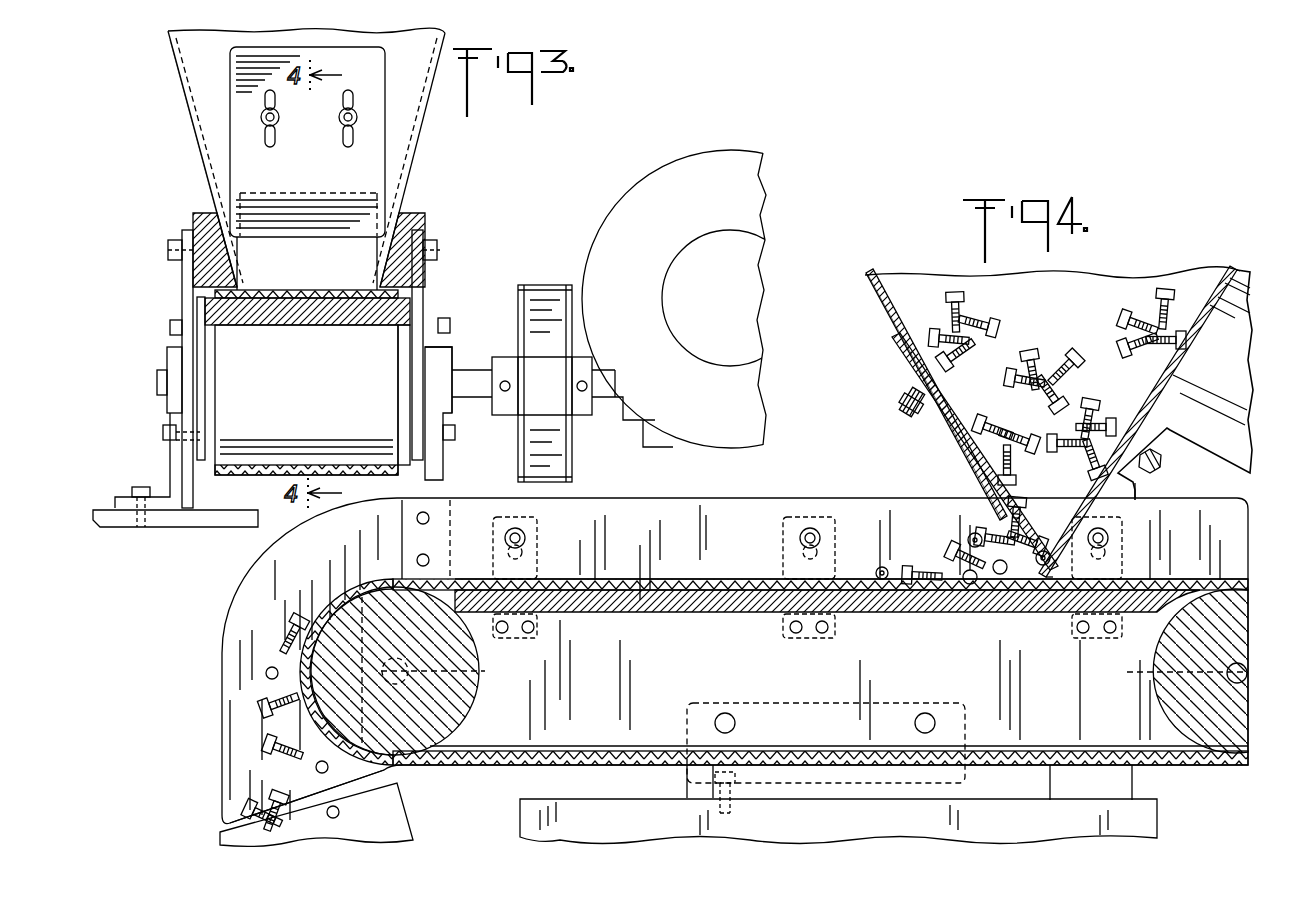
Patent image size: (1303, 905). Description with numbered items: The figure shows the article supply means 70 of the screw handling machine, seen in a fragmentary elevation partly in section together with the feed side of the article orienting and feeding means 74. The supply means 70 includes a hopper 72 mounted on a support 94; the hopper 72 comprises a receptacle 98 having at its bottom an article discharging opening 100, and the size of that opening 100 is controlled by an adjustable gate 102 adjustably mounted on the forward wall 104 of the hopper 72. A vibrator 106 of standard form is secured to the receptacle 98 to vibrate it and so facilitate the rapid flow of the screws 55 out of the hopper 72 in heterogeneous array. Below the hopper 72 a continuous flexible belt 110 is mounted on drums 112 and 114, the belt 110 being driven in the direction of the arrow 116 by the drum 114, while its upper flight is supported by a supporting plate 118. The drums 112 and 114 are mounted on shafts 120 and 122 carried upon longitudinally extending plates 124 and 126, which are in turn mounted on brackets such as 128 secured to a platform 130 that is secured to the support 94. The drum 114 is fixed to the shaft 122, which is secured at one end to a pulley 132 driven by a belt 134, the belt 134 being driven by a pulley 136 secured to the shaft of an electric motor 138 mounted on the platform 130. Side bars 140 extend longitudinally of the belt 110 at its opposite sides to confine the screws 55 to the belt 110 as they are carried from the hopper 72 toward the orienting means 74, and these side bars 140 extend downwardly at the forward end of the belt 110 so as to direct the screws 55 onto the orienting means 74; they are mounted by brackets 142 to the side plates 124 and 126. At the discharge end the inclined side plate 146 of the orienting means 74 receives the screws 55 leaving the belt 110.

In FIG. 4, the screws 55 is at (1053, 343).
In FIG. 4, the article supply means 70 is at (851, 491).
In FIG. 4, the hopper 72 is at (860, 306).
In FIG. 4, the article orienting and feeding means 74 is at (429, 836).
In FIG. 3, the support 94 is at (118, 528).
In FIG. 3, the receptacle 98 is at (183, 78).
In FIG. 3, the article discharging opening 100 is at (307, 263).
In FIG. 4, the article discharging opening 100 is at (1015, 520).
In FIG. 3, the adjustable gate 102 is at (307, 142).
In FIG. 4, the adjustable gate 102 is at (960, 455).
In FIG. 3, the forward wall 104 is at (210, 108).
In FIG. 4, the forward wall 104 is at (885, 318).
In FIG. 4, the vibrator 106 is at (1220, 335).
In FIG. 3, the continuous flexible belt 110 is at (258, 326).
In FIG. 4, the continuous flexible belt 110 is at (628, 578).
In FIG. 4, the drum 112 is at (470, 693).
In FIG. 4, the drum 114 is at (1175, 690).
In FIG. 4, the arrow 116 is at (905, 533).
In FIG. 3, the supporting plate 118 is at (352, 312).
In FIG. 4, the supporting plate 118 is at (652, 608).
In FIG. 4, the shaft 120 is at (457, 664).
In FIG. 3, the shaft 122 is at (470, 378).
In FIG. 4, the shaft 122 is at (1130, 672).
In FIG. 3, the plate 124 is at (195, 358).
In FIG. 4, the plate 124 is at (862, 657).
In FIG. 3, the plate 126 is at (430, 365).
In FIG. 3, the bracket 128 is at (180, 465).
In FIG. 4, the bracket 128 is at (690, 790).
In FIG. 3, the platform 130 is at (250, 527).
In FIG. 4, the platform 130 is at (528, 816).
In FIG. 3, the pulley 132 is at (522, 478).
In FIG. 3, the belt 134 is at (555, 470).
In FIG. 3, the pulley 136 is at (574, 415).
In FIG. 3, the electric motor 138 is at (680, 448).
In FIG. 3, the side bars 140 is at (193, 212).
In FIG. 4, the side bars 140 is at (743, 498).
In FIG. 3, the brackets 142 is at (182, 290).
In FIG. 4, the brackets 142 is at (545, 560).
In FIG. 4, the side plate 146 is at (385, 805).